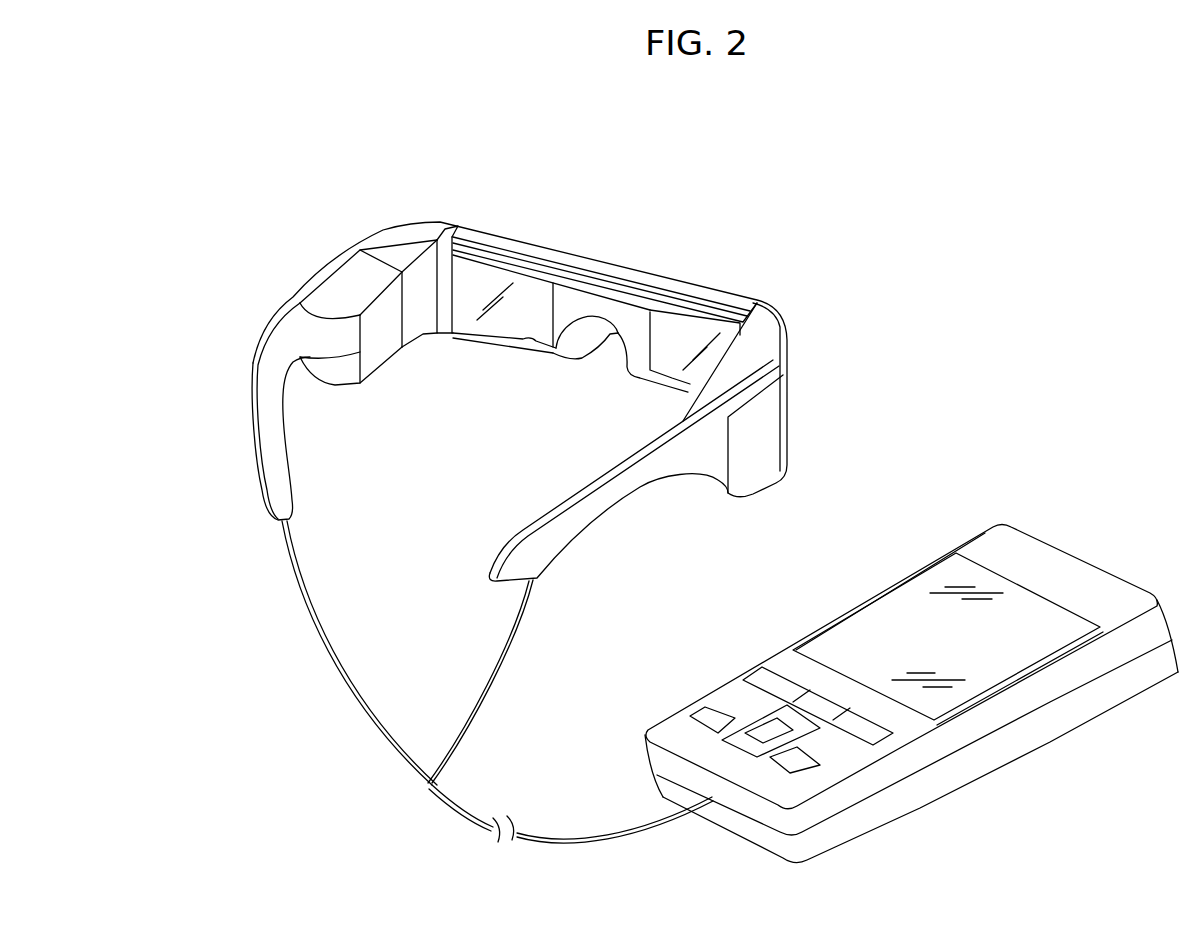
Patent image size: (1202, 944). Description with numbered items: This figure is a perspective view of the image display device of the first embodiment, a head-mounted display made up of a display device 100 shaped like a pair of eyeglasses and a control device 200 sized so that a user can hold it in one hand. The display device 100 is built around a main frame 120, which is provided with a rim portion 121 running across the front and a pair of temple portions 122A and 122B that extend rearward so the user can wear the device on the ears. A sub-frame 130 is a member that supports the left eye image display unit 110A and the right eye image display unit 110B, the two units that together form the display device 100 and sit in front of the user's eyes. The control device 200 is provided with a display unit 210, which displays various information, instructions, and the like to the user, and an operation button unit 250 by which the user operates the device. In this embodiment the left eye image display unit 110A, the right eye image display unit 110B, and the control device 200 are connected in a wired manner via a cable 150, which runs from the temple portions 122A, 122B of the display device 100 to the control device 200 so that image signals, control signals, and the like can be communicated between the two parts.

The display device 100 is at (789, 184).
The left eye image display unit 110A is at (514, 214).
The right eye image display unit 110B is at (721, 267).
The main frame 120 is at (403, 232).
The rim portion 121 is at (617, 263).
The temple portion 122A is at (265, 360).
The temple portion 122B is at (617, 503).
The sub-frame 130 is at (490, 240).
The cable 150 is at (550, 838).
The control device 200 is at (1106, 540).
The display unit 210 is at (910, 610).
The operation button unit 250 is at (757, 622).